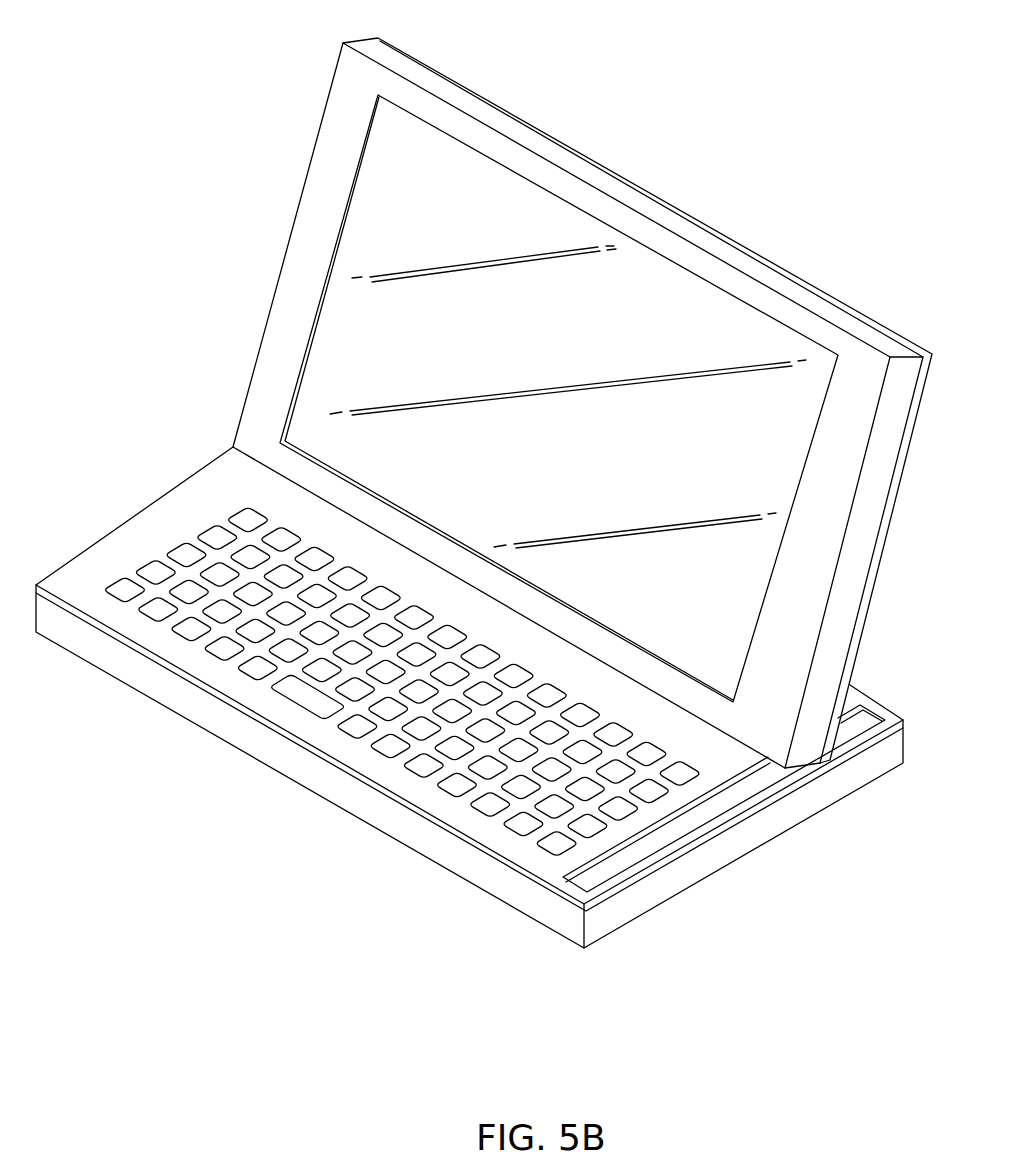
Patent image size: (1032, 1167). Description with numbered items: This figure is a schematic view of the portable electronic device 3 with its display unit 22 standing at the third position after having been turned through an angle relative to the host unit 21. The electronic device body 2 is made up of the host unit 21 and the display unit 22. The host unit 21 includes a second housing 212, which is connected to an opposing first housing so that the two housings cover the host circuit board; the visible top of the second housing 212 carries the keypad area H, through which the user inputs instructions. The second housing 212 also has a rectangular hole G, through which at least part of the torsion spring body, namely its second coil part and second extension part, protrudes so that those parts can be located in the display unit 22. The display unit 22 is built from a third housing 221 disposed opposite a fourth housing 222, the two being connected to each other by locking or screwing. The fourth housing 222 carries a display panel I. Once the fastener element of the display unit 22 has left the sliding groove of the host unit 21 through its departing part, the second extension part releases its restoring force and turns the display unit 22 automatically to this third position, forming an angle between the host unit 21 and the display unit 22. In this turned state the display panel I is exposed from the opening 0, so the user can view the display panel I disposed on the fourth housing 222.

The portable electronic device 3 is at (257, 77).
The electronic device body 2 is at (154, 373).
The display unit 22 is at (266, 349).
The host unit 21 is at (196, 488).
The fourth housing 222 is at (738, 264).
The third housing 221 is at (818, 289).
The display panel I is at (482, 178).
The opening 0 is at (558, 190).
The second housing 212 is at (462, 833).
The rectangular hole G is at (617, 863).
The keypad area H is at (313, 700).